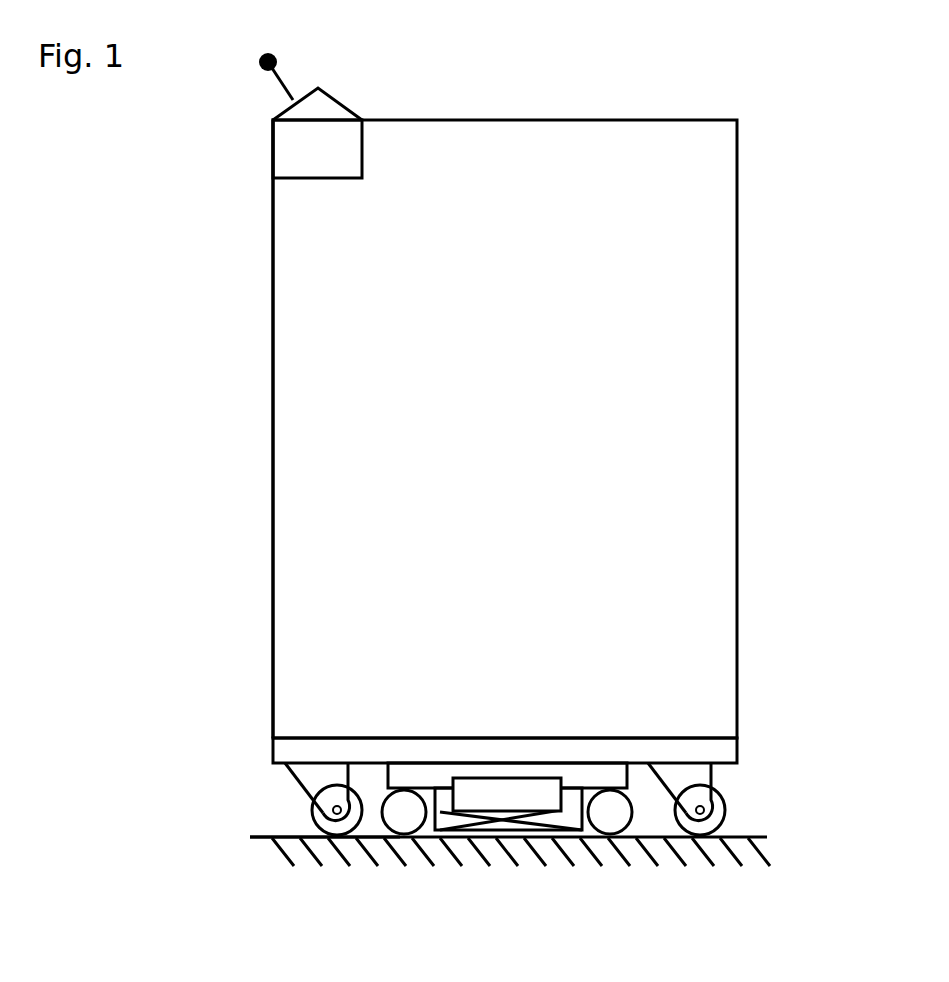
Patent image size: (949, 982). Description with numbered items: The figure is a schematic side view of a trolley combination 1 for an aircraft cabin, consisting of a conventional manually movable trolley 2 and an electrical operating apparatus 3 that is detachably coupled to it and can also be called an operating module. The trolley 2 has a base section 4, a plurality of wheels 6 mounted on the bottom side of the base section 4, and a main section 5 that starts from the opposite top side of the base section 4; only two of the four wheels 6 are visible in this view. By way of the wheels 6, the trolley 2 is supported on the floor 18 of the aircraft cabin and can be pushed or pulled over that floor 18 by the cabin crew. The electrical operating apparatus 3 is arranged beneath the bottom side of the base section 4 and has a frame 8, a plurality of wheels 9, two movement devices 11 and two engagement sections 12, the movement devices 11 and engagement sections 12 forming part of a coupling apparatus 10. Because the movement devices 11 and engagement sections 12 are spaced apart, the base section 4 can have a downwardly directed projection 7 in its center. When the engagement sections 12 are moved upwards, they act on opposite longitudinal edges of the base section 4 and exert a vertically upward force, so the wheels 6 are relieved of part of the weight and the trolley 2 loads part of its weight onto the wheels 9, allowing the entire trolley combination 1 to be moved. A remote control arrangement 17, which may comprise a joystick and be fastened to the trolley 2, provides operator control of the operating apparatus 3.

The trolley combination 1 is at (862, 125).
The trolley 2 is at (821, 304).
The electrical operating apparatus 3 is at (598, 883).
The base section 4 is at (290, 748).
The main section 5 is at (295, 453).
The wheels 6 is at (315, 818).
The projection 7 is at (595, 772).
The frame 8 is at (445, 830).
The wheels 9 is at (403, 813).
The coupling apparatus 10 is at (517, 855).
The movement devices 11 is at (487, 825).
The engagement sections 12 is at (503, 793).
The remote control arrangement 17 is at (285, 142).
The floor 18 is at (255, 838).